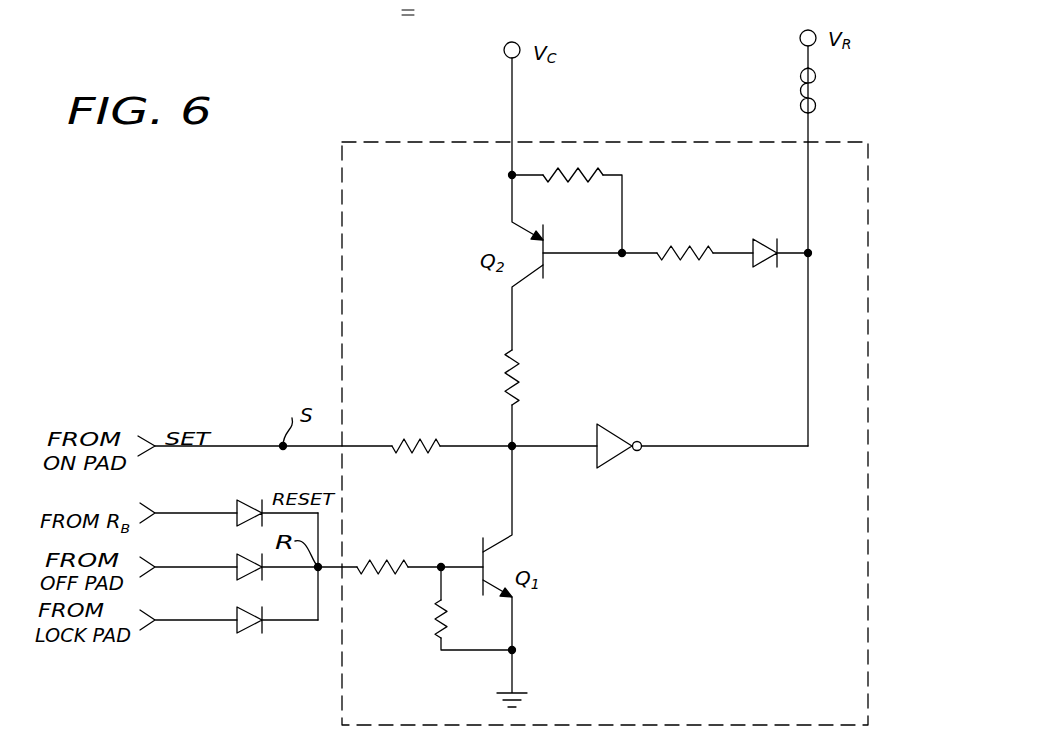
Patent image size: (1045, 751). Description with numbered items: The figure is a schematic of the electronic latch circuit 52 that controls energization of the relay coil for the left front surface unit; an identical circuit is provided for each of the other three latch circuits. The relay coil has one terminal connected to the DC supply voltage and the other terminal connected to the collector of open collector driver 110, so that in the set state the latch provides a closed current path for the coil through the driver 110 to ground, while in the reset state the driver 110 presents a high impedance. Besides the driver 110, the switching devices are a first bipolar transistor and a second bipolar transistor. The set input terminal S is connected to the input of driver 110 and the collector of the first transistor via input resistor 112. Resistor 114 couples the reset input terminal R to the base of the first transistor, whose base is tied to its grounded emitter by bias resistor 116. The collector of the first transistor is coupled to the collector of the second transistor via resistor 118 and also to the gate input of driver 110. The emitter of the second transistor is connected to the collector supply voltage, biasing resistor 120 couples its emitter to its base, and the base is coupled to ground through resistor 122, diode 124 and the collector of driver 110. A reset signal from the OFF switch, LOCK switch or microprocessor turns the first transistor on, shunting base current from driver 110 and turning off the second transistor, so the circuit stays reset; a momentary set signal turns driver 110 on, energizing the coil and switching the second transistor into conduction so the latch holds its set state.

The latch circuit 52 is at (598, 142).
The biasing resistor 120 is at (598, 172).
The resistor 122 is at (683, 246).
The diode 124 is at (761, 262).
The resistor 118 is at (516, 358).
The input resistor 112 is at (406, 444).
The open collector driver 110 is at (610, 430).
The resistor 114 is at (370, 565).
The bias resistor 116 is at (434, 630).